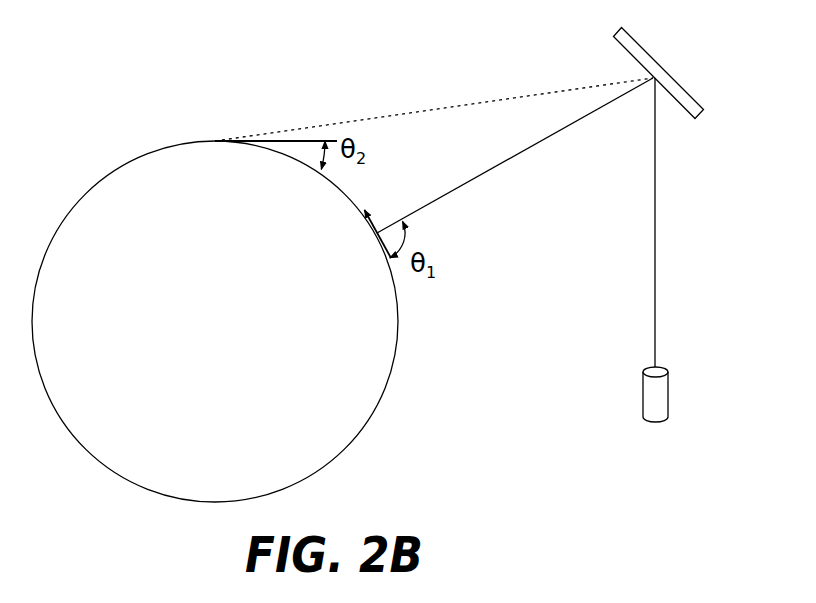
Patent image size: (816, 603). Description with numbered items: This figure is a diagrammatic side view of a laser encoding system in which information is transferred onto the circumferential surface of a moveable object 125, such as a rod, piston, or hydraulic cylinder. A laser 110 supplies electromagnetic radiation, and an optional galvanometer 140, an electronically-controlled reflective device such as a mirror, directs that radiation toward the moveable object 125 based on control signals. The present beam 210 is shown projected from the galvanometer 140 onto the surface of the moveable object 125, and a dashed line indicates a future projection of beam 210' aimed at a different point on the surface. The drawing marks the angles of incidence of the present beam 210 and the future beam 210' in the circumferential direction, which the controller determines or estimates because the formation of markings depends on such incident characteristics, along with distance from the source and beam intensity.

The moveable object 125 is at (187, 141).
The future projection of beam 210' is at (434, 95).
The beam 210 is at (515, 155).
The galvanometer 140 is at (680, 82).
The laser 110 is at (668, 388).